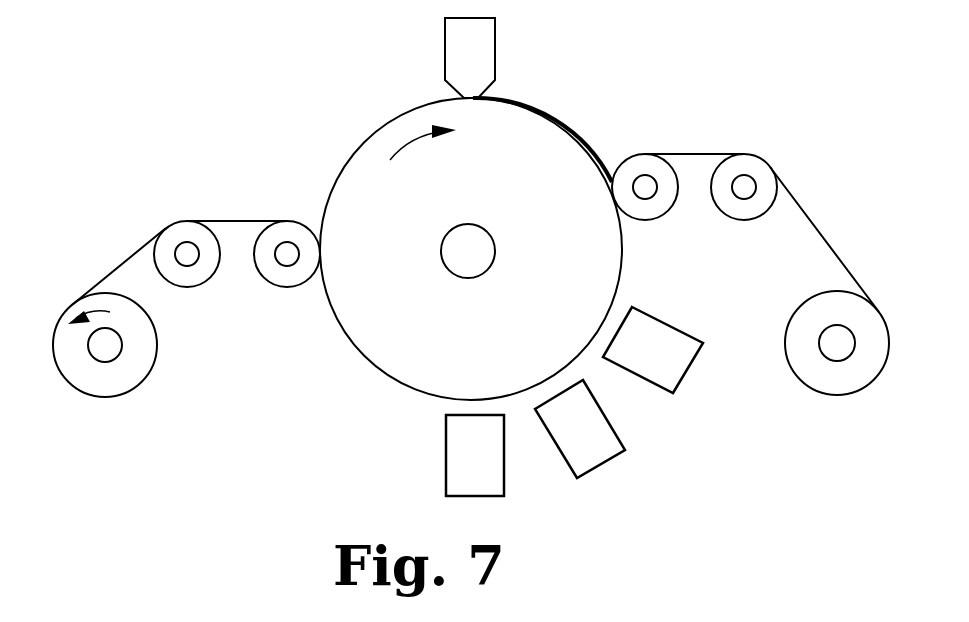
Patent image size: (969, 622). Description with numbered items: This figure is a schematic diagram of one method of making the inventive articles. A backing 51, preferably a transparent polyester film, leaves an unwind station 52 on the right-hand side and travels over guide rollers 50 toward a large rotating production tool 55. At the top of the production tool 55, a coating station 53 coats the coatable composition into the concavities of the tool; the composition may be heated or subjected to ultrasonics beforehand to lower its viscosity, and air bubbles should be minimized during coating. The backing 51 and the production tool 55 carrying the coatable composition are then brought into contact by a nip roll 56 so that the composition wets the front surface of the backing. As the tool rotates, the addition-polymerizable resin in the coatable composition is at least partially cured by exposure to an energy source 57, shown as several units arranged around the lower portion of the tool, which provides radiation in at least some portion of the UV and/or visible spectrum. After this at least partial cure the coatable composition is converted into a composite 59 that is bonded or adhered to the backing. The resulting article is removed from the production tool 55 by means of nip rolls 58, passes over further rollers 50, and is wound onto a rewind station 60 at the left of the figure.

The roller 50 is at (186, 275).
The backing 51 is at (813, 230).
The unwind station 52 is at (787, 363).
The coating station 53 is at (495, 35).
The production tool 55 is at (382, 127).
The nip roll 56 is at (663, 203).
The energy source 57 is at (660, 390).
The nip rolls 58 is at (290, 275).
The composite 59 is at (237, 217).
The rewind station 60 is at (143, 373).